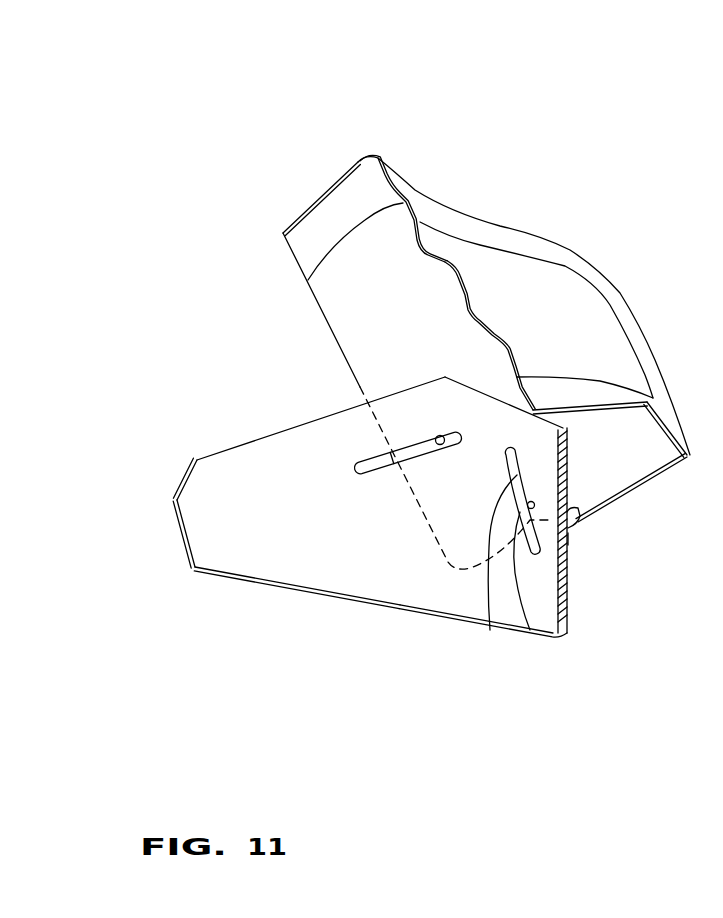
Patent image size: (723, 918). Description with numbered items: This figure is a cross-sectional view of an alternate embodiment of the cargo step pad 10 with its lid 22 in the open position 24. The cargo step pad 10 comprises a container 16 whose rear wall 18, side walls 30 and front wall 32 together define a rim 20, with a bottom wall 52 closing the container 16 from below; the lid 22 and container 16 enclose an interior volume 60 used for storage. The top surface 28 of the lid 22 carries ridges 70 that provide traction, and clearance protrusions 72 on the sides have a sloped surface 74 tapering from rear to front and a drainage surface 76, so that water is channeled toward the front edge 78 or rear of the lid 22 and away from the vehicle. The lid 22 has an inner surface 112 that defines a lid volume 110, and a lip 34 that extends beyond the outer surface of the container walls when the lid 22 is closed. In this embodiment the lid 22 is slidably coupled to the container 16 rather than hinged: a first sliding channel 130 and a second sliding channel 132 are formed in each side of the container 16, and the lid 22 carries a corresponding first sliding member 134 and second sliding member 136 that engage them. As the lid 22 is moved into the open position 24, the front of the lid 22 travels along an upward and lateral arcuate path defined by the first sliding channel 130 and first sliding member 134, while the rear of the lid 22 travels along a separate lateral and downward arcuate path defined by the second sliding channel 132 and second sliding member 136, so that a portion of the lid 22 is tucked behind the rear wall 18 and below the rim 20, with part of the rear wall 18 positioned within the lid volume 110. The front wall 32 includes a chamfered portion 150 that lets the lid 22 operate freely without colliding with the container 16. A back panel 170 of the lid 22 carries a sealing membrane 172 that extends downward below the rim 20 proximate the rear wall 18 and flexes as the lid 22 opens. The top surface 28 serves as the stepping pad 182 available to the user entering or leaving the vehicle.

The cargo step pad 10 is at (200, 143).
The container 16 is at (250, 587).
The rear wall 18 is at (566, 614).
The rim 20 is at (197, 458).
The lid 22 is at (490, 197).
The open position 24 is at (566, 142).
The top surface 28 is at (457, 277).
The side walls 30 is at (317, 552).
The front wall 32 is at (178, 520).
The lip 34 is at (283, 233).
The bottom wall 52 is at (418, 614).
The interior volume 60 is at (251, 510).
The ridges 70 is at (310, 280).
The clearance protrusions 72 is at (609, 267).
The sloped surface 74 is at (448, 218).
The drainage surface 76 is at (559, 334).
The front edge 78 is at (357, 163).
The lid volume 110 is at (418, 349).
The inner surface 112 is at (325, 225).
The first sliding channel 130 is at (372, 460).
The second sliding channel 132 is at (490, 630).
The first sliding member 134 is at (437, 435).
The second sliding member 136 is at (530, 630).
The chamfered portion 150 is at (178, 487).
The back panel 170 is at (625, 495).
The sealing membrane 172 is at (572, 555).
The stepping pad 182 is at (517, 363).